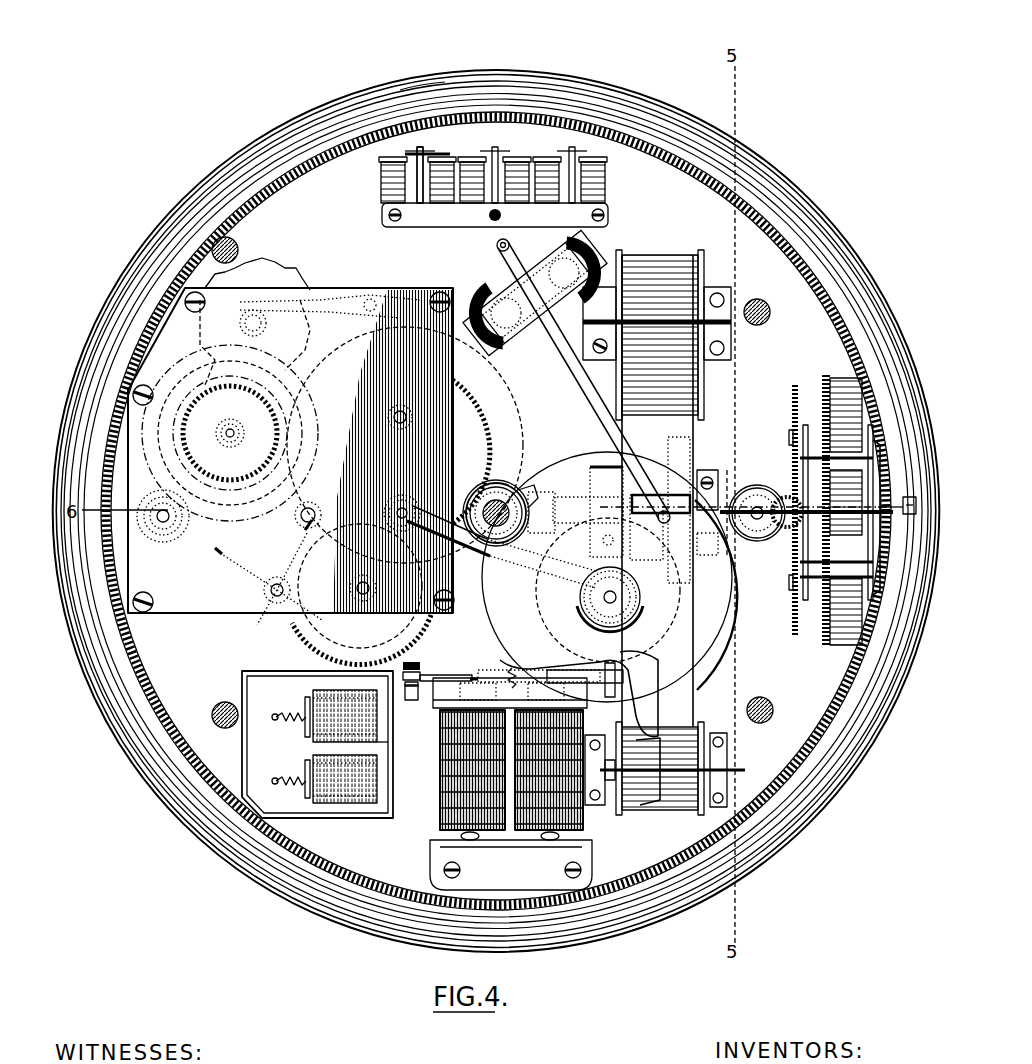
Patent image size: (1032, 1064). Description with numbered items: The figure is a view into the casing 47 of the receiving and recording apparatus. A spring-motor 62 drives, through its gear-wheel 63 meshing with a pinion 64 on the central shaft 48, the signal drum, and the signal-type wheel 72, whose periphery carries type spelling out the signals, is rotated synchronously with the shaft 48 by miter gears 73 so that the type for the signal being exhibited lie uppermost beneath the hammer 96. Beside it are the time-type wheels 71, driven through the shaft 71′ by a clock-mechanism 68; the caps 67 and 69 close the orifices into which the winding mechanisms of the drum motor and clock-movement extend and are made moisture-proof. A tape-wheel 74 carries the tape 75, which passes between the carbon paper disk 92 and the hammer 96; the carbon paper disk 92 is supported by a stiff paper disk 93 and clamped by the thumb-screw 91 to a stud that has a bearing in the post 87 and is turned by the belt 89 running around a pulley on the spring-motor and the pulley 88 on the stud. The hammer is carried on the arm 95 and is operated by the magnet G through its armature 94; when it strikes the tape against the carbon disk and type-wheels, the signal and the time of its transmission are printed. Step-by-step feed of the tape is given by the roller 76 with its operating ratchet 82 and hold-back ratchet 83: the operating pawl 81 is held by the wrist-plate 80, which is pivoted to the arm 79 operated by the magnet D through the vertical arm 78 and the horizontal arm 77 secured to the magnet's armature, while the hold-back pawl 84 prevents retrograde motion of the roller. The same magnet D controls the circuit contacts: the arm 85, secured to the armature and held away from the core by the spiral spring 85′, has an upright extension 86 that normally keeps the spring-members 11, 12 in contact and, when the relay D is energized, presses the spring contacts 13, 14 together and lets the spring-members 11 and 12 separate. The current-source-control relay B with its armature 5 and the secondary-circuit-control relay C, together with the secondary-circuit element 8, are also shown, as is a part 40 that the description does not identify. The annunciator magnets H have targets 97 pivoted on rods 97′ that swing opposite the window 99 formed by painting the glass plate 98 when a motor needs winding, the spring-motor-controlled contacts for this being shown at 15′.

The window 99 is at (404, 160).
The rod 97′ is at (421, 148).
The glass plate 98 is at (450, 120).
The target 97 is at (440, 150).
The annunciator magnet H is at (609, 213).
The spring-motor-controlled contacts 15′ is at (283, 300).
The casing 47 is at (138, 672).
The armature 94 is at (498, 296).
The tape 75 is at (645, 262).
The tape-wheel 74 is at (700, 262).
The magnet G is at (505, 350).
The arm 95 is at (584, 372).
The spring-motor 62 is at (325, 450).
The clock-mechanism 68 is at (834, 378).
The pinion 64 is at (510, 482).
The central shaft 48 is at (535, 490).
The carbon paper disk 92 is at (585, 472).
The hammer 96 is at (606, 502).
The gear-wheel 63 is at (488, 490).
The miter gears 73 is at (538, 490).
The signal-type wheel 72 is at (648, 470).
The time-type wheels 71 is at (678, 438).
The shaft 71′ is at (720, 492).
The cap 69 is at (760, 486).
The cap 67 is at (170, 528).
The belt 89 is at (518, 585).
The post 87 is at (632, 592).
The pulley 88 is at (630, 615).
The thumb-screw 91 is at (625, 630).
The stiff paper disk 93 is at (679, 491).
The upright extension 86 is at (375, 662).
The spring-member 11 is at (414, 662).
The spring-member 12 is at (420, 676).
The arm 85 is at (466, 678).
The contact strip 40 is at (486, 666).
The spiral spring 85′ is at (539, 669).
The horizontal arm 77 is at (572, 668).
The vertical arm 78 is at (610, 662).
The arm 79 is at (612, 700).
The operating ratchet 82 is at (625, 738).
The hold-back pawl 84 is at (730, 772).
The wrist-plate 80 is at (596, 806).
The operating pawl 81 is at (612, 782).
The roller 76 is at (672, 810).
The hold-back ratchet 83 is at (712, 808).
The magnet D is at (440, 798).
The spring contact 14 is at (405, 707).
The spring contact 13 is at (412, 702).
The secondary-circuit element 8 is at (306, 704).
The armature 5 is at (306, 768).
The secondary-circuit-control relay C is at (360, 742).
The current-source-control relay B is at (352, 812).